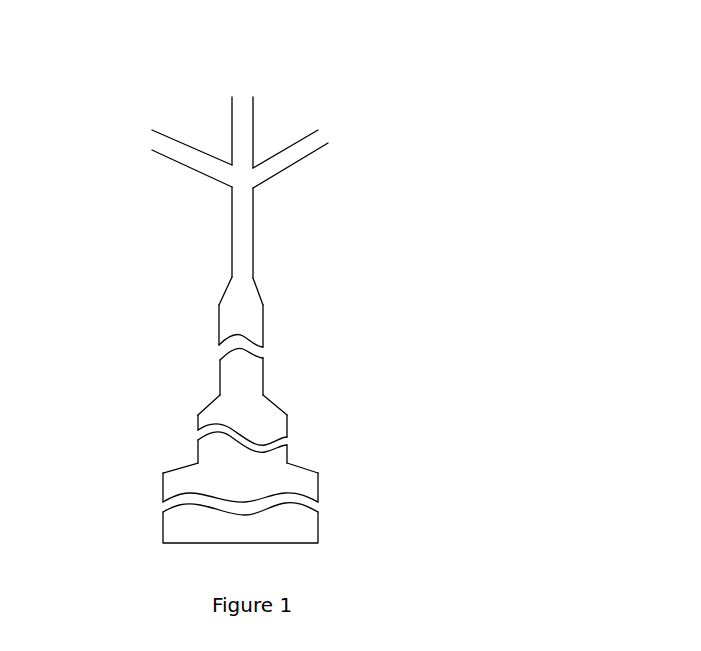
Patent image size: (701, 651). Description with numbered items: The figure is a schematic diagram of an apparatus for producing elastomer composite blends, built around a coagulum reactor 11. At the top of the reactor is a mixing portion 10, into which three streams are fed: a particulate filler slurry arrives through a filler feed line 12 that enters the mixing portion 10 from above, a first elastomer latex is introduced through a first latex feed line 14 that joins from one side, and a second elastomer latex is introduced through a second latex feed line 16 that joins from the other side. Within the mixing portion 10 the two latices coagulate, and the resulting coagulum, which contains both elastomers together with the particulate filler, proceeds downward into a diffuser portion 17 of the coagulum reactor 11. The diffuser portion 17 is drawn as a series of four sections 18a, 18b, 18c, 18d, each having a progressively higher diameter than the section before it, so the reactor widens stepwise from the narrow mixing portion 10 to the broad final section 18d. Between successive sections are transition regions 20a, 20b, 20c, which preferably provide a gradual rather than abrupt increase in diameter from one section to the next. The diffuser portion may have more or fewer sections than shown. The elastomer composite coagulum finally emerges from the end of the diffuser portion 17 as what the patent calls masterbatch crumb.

The mixing portion 10 is at (240, 178).
The coagulum reactor 11 is at (390, 251).
The filler feed line 12 is at (242, 90).
The first latex feed line 14 is at (328, 140).
The second latex feed line 16 is at (133, 137).
The diffuser portion 17 is at (166, 304).
The section 18a is at (263, 219).
The section 18b is at (273, 337).
The section 18c is at (297, 435).
The section 18d is at (328, 515).
The transition region 20a is at (274, 294).
The transition region 20b is at (285, 404).
The transition region 20c is at (319, 461).